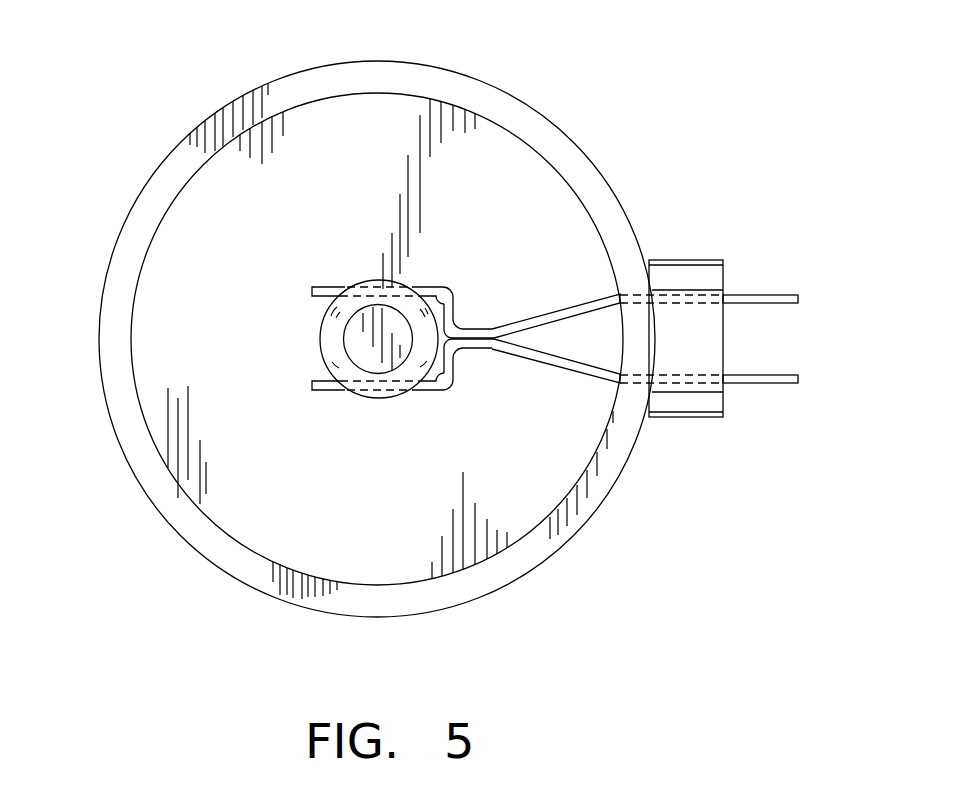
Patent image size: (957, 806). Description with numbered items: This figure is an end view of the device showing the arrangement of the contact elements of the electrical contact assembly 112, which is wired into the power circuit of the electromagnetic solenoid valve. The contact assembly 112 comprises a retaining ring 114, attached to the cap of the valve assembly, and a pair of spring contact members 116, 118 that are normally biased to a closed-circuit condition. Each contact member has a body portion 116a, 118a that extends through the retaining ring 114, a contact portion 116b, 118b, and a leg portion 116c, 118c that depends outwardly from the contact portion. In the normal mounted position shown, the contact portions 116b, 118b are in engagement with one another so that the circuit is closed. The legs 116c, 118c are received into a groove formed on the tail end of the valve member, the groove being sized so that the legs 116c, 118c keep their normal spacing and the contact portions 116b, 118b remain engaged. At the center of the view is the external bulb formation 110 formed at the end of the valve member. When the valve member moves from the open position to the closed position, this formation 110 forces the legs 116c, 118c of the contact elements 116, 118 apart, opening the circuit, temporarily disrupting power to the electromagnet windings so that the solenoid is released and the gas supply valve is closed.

The external formation 110 is at (330, 343).
The electrical contact assembly 112 is at (656, 259).
The retaining ring 114 is at (183, 138).
The spring contact member 116 is at (554, 371).
The body portion 116a is at (684, 340).
The contact portion 116b is at (473, 342).
The leg portion 116c is at (328, 390).
The spring contact member 118 is at (554, 308).
The body portion 118a is at (684, 340).
The contact portion 118b is at (473, 337).
The leg portion 118c is at (327, 287).